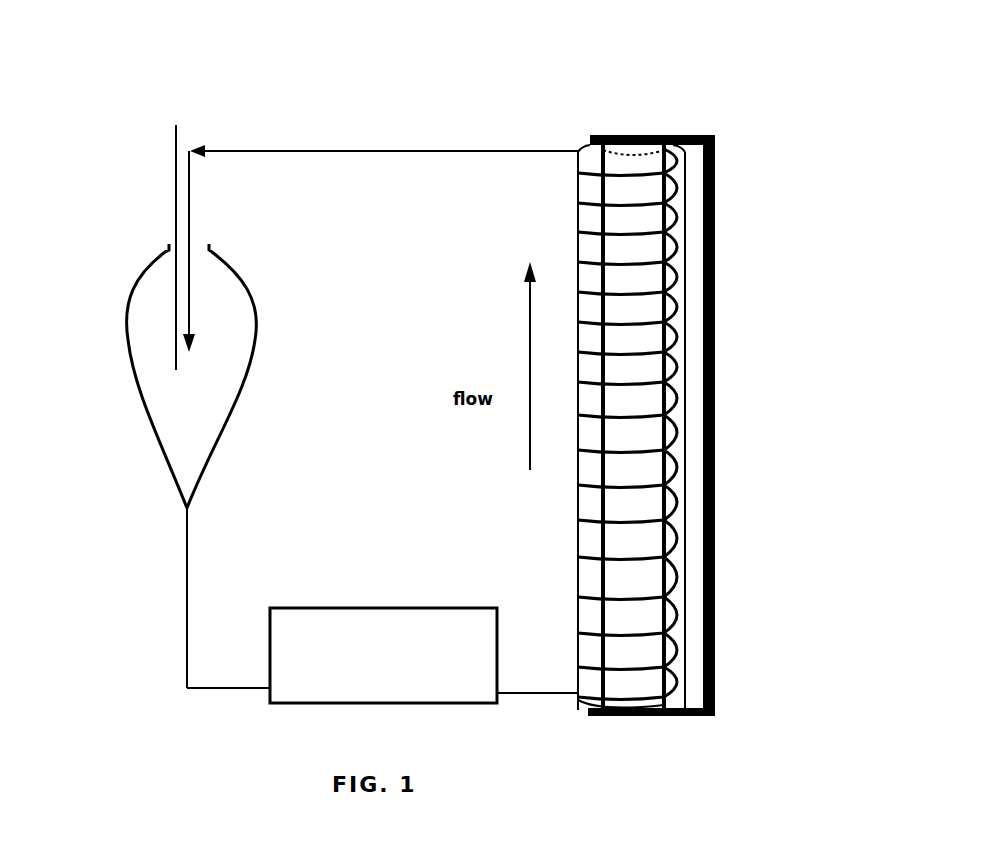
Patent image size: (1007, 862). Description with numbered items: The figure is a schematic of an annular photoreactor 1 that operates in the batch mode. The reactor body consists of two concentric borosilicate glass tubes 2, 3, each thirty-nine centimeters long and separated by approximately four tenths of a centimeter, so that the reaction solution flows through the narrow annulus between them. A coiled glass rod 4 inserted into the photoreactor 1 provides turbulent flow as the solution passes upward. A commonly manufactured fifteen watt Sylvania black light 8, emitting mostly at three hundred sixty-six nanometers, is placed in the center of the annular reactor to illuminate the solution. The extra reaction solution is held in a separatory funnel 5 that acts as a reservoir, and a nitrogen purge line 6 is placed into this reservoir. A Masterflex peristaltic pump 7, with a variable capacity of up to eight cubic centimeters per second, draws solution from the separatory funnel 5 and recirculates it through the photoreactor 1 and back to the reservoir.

The photoreactor 1 is at (719, 425).
The concentric borosilicate glass tube 2 is at (666, 175).
The concentric borosilicate glass tube 3 is at (686, 208).
The coiled glass rod 4 is at (675, 263).
The separatory funnel 5 is at (250, 428).
The nitrogen purge line 6 is at (152, 147).
The peristaltic pump 7 is at (382, 655).
The black light 8 is at (635, 160).